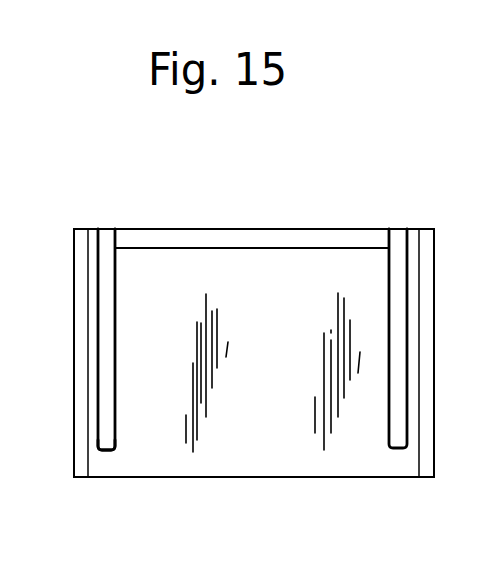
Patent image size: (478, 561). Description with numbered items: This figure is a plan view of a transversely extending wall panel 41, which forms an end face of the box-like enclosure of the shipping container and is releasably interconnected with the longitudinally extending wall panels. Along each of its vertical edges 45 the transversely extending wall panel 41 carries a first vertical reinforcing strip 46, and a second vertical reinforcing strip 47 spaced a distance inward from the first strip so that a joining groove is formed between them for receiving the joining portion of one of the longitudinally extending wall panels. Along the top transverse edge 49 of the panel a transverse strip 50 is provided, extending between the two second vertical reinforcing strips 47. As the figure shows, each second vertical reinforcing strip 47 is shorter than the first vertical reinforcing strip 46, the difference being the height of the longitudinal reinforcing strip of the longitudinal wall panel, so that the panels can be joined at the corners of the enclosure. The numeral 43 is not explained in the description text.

The transversely extending wall panel 41 is at (163, 278).
The left U-shaped channel member 43 is at (90, 380).
The vertical edges 45 is at (74, 342).
The first vertical reinforcing strip 46 is at (80, 257).
The second vertical reinforcing strip 47 is at (107, 437).
The top transverse edge 49 is at (385, 228).
The transverse strip 50 is at (312, 240).